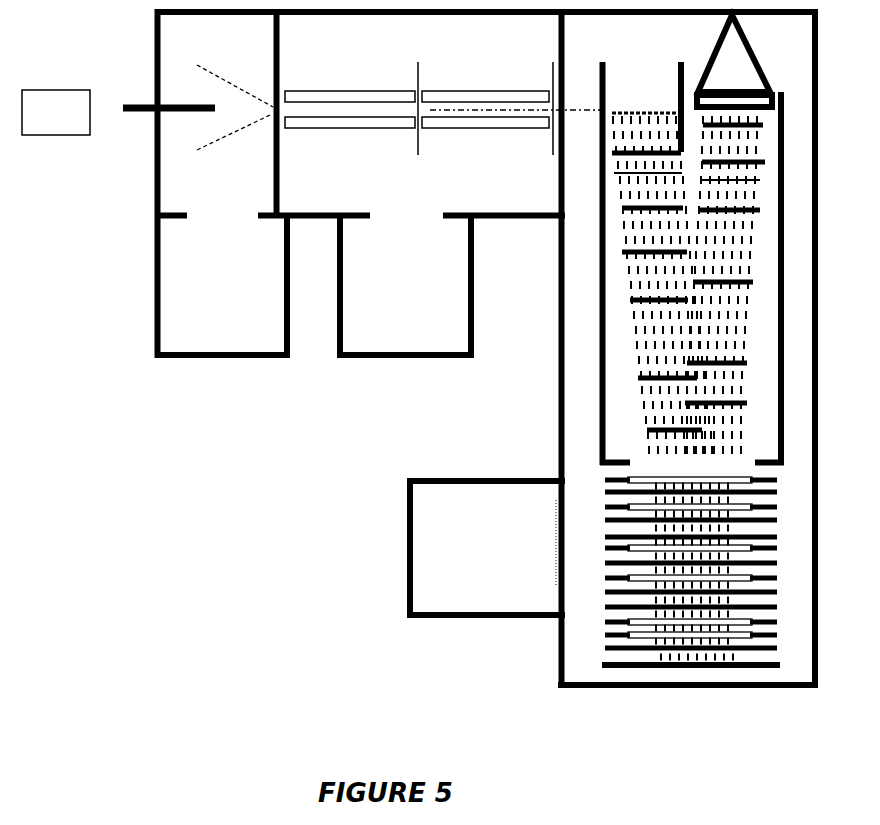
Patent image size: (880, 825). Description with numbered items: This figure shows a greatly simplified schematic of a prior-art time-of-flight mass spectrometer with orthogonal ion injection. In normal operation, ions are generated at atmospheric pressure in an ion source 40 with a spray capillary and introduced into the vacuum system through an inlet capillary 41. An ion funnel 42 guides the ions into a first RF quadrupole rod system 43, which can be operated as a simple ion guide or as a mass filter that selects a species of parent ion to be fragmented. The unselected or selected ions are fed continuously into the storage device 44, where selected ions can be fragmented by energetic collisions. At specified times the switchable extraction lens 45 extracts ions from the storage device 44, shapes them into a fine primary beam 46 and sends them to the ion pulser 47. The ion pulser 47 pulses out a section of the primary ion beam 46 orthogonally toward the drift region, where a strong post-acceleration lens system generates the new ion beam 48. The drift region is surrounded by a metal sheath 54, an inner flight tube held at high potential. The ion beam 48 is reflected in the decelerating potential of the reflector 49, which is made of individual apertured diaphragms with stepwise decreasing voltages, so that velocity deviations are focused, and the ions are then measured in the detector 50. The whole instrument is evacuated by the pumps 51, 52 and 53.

The ion source 40 is at (110, 108).
The inlet capillary 41 is at (222, 86).
The ion funnel 42 is at (233, 135).
The first RF quadrupole rod system 43 is at (351, 106).
The storage device 44 is at (485, 93).
The switchable extraction lens 45 is at (552, 165).
The primary ion beam 46 is at (583, 100).
The ion pulser 47 is at (652, 154).
The ion beam 48 is at (688, 351).
The reflector 49 is at (694, 571).
The detector 50 is at (734, 127).
The pump 51 is at (222, 286).
The pump 52 is at (405, 286).
The pump 53 is at (486, 548).
The metal sheath 54 is at (693, 448).